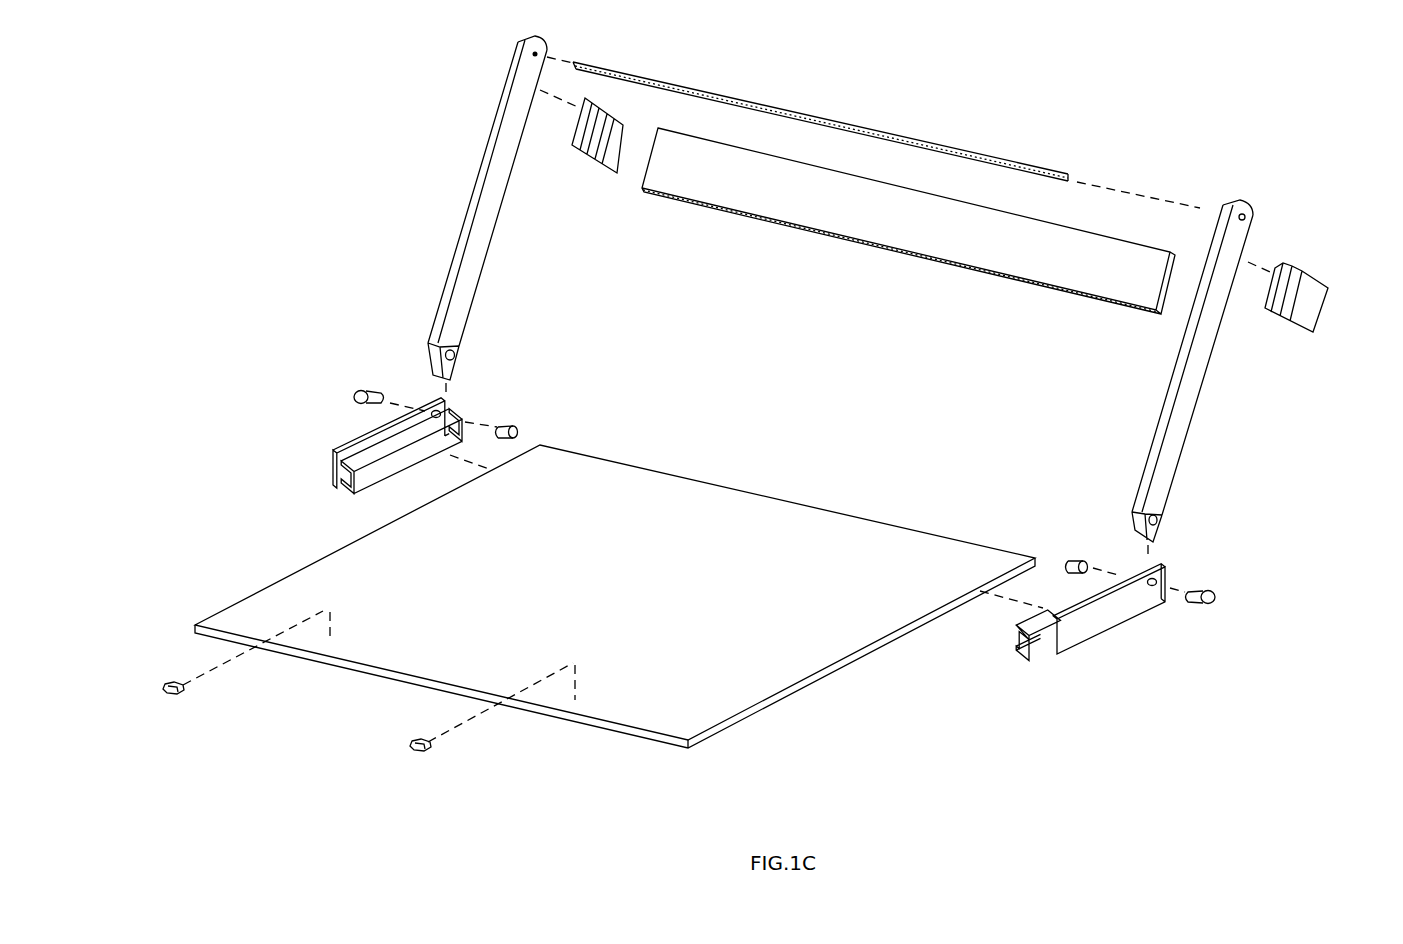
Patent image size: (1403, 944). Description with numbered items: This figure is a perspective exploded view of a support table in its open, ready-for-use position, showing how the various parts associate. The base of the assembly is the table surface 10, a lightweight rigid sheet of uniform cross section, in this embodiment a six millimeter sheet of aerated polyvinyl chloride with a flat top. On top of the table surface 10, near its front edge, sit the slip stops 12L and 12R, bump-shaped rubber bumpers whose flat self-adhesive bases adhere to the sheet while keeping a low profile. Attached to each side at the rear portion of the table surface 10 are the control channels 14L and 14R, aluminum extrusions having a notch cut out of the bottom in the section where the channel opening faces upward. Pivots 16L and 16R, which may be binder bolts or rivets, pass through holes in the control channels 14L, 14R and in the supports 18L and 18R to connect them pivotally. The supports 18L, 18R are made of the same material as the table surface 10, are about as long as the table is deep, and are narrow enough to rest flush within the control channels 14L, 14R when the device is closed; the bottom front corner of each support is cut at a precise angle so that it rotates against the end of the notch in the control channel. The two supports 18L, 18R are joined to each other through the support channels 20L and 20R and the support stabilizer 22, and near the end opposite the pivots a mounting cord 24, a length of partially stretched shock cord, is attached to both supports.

The table surface 10 is at (758, 667).
The slip stop (left) 12L is at (178, 695).
The slip stop (right) 12R is at (425, 752).
The control channel (left) 14L is at (337, 450).
The control channel (right) 14R is at (1098, 622).
The pivot (left) 16L is at (358, 388).
The pivot (right) 16R is at (1205, 602).
The support (left) 18L is at (493, 190).
The support (right) 18R is at (1205, 350).
The support channel (left) 20L is at (597, 157).
The support channel (right) 20R is at (1320, 297).
The support stabilizer 22 is at (858, 223).
The mounting cord 24 is at (850, 130).